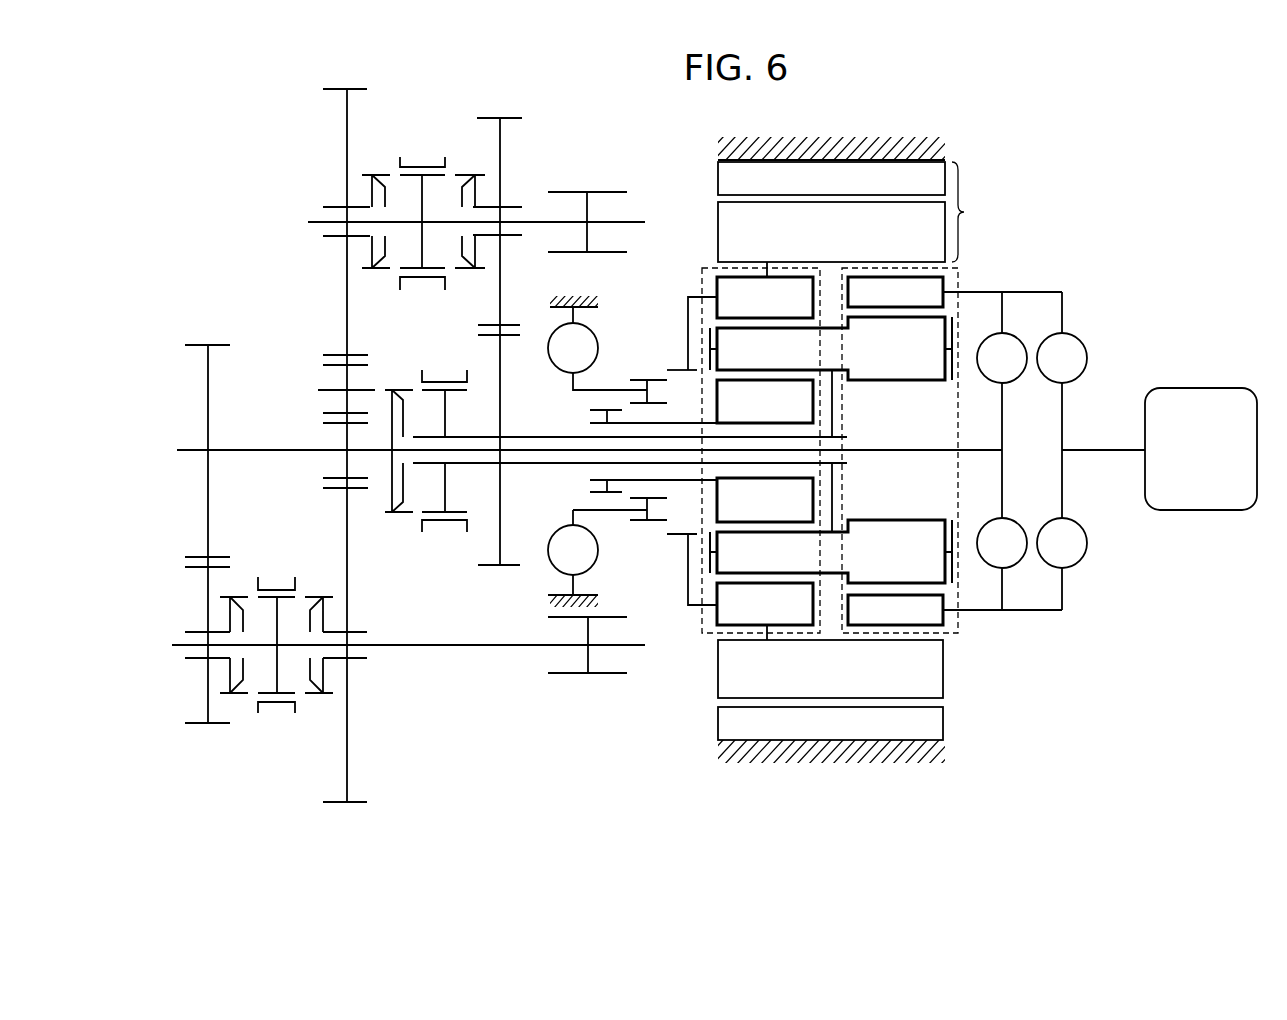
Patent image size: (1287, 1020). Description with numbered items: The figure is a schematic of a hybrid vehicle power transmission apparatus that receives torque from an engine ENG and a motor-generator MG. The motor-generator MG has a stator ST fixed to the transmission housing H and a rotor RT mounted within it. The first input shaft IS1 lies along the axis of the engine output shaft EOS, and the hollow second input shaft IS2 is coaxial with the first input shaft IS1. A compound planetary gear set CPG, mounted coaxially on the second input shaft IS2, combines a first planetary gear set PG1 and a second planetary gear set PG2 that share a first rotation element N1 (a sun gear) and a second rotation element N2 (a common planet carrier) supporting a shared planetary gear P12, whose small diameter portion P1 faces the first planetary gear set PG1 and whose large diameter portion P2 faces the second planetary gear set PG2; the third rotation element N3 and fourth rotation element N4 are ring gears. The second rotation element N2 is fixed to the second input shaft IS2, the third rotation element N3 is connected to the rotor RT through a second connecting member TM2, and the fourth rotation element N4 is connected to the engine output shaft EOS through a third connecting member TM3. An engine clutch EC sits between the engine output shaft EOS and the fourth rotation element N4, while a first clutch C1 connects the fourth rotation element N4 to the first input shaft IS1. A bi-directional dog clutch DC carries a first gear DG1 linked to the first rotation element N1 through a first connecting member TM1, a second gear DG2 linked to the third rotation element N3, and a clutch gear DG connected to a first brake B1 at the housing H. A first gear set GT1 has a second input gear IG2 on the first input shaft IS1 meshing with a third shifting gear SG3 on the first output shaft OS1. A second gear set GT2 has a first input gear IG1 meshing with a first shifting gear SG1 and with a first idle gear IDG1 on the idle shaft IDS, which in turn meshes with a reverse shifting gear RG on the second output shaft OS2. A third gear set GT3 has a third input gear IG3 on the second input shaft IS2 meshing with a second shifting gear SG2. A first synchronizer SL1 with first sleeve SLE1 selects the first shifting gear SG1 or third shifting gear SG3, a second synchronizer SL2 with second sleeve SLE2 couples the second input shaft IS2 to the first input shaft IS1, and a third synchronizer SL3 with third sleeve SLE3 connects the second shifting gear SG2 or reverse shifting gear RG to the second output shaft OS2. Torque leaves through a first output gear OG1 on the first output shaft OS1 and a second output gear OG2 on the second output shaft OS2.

The first input shaft IS1 is at (918, 453).
The second input shaft IS2 is at (535, 465).
The first output shaft OS1 is at (437, 647).
The second output shaft OS2 is at (645, 222).
The first shifting gear SG1 is at (350, 740).
The second shifting gear SG2 is at (500, 157).
The third shifting gear SG3 is at (208, 686).
The first input gear IG1 is at (347, 462).
The second input gear IG2 is at (208, 492).
The third input gear IG3 is at (500, 382).
The reverse shifting gear RG is at (347, 137).
The idle shaft IDS is at (325, 388).
The first idle gear IDG1 is at (352, 378).
The first sleeve SLE1 is at (270, 714).
The second sleeve SLE2 is at (437, 534).
The third sleeve SLE3 is at (411, 156).
The first synchronizer SL1 is at (287, 726).
The second synchronizer SL2 is at (452, 546).
The third synchronizer SL3 is at (432, 146).
The first output gear OG1 is at (608, 676).
The second output gear OG2 is at (600, 192).
The first gear set GT1 is at (206, 727).
The second gear set GT2 is at (341, 808).
The third gear set GT3 is at (500, 588).
The first brake B1 is at (597, 451).
The transmission housing H is at (835, 148).
The clutch gear DG is at (663, 362).
The first gear DG1 is at (590, 410).
The second gear DG2 is at (680, 370).
The first connecting member TM1 is at (633, 482).
The second connecting member TM2 is at (688, 292).
The third connecting member TM3 is at (1043, 291).
The bi-directional dog clutch DC is at (681, 569).
The first planetary gear set PG1 is at (700, 586).
The second planetary gear set PG2 is at (871, 642).
The compound planetary gear set CPG is at (822, 818).
The first rotation element N1 is at (765, 451).
The second rotation element N2 is at (832, 410).
The third rotation element N3 is at (765, 451).
The fourth rotation element N4 is at (895, 451).
The small diameter portion P1 is at (831, 450).
The large diameter portion P2 is at (895, 350).
The shared planetary gear P12 is at (832, 350).
The stator ST is at (831, 451).
The rotor RT is at (831, 450).
The motor-generator MG is at (984, 212).
The first clutch C1 is at (1002, 450).
The engine clutch EC is at (1062, 450).
The engine ENG is at (1201, 449).
The engine output shaft EOS is at (1112, 452).